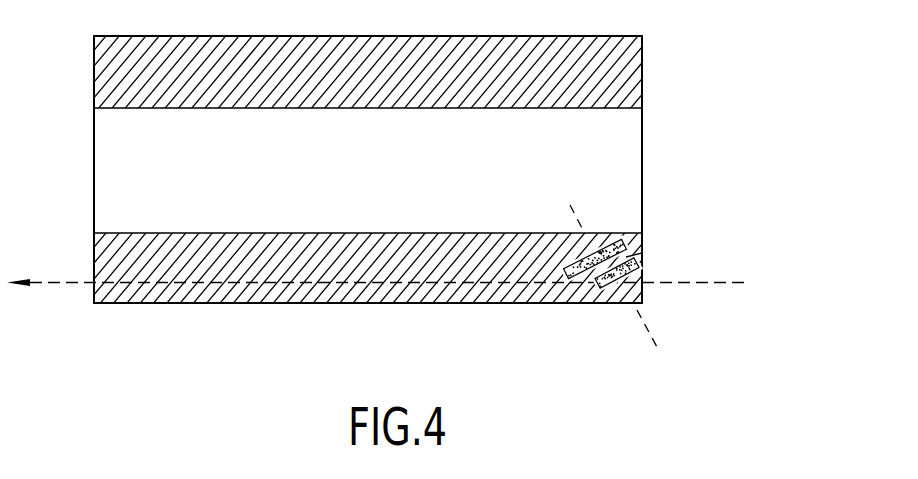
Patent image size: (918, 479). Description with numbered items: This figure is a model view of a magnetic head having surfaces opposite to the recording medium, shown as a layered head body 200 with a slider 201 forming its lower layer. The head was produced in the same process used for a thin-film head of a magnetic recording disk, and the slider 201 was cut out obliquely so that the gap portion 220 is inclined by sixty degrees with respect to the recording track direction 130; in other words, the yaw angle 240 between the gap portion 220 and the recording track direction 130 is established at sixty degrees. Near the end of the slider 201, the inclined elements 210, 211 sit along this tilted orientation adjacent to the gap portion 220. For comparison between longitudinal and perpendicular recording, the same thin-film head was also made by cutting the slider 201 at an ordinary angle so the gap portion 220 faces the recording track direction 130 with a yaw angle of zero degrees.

The layered body 200 is at (632, 153).
The slider 201 is at (450, 303).
The first piezoelectric element 210 is at (622, 242).
The second piezoelectric element 211 is at (637, 263).
The gap portion 220 is at (642, 253).
The recording track direction 130 is at (717, 283).
The yaw angle 240 is at (636, 313).